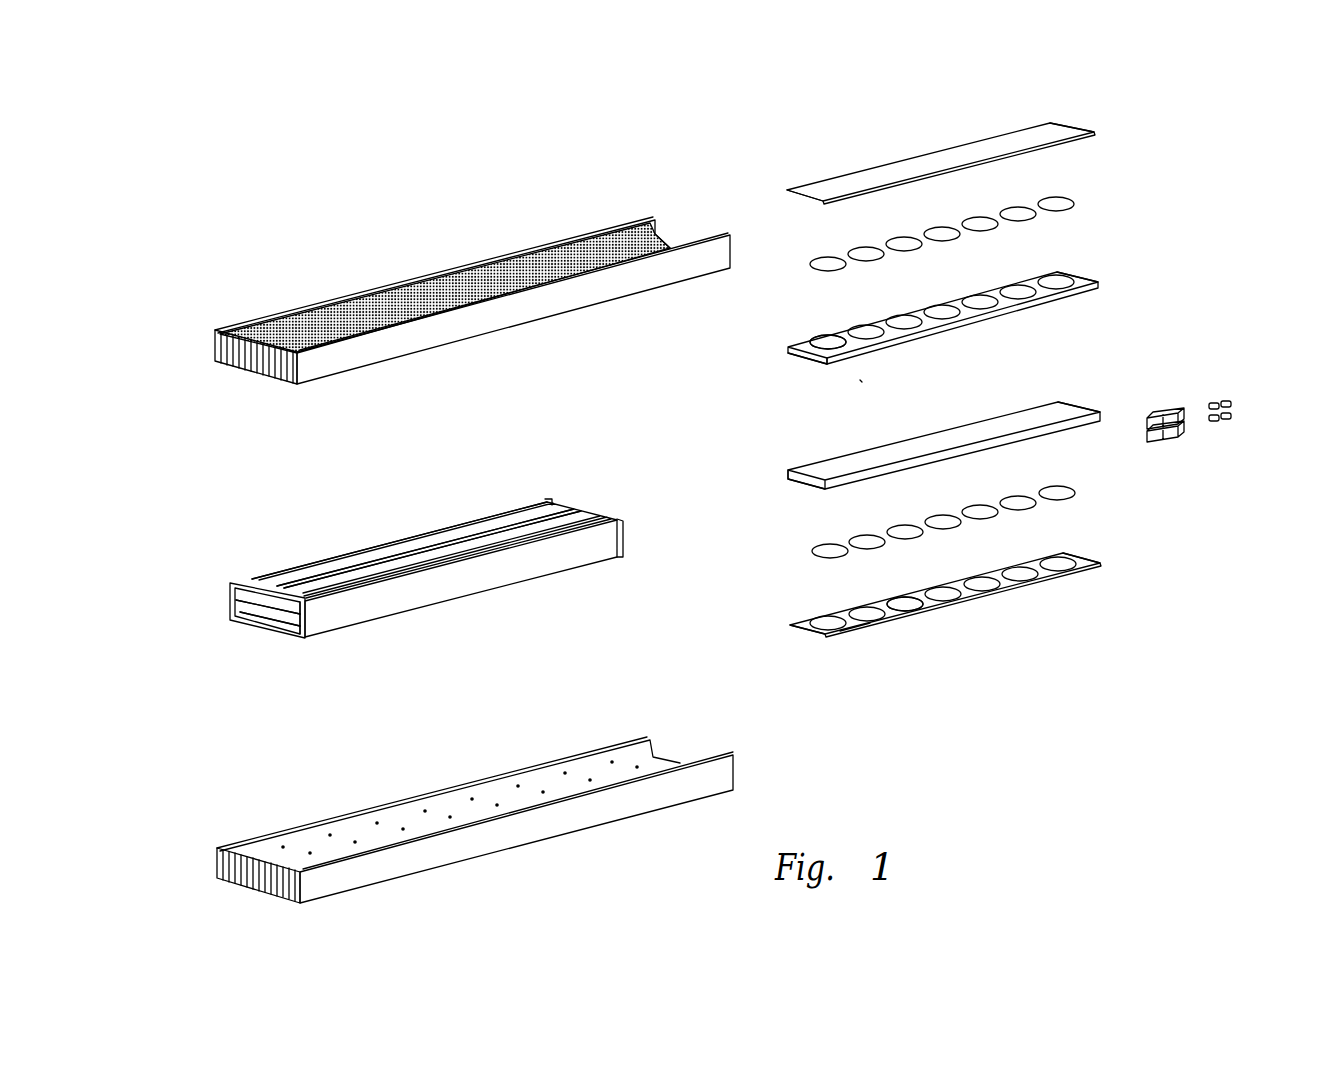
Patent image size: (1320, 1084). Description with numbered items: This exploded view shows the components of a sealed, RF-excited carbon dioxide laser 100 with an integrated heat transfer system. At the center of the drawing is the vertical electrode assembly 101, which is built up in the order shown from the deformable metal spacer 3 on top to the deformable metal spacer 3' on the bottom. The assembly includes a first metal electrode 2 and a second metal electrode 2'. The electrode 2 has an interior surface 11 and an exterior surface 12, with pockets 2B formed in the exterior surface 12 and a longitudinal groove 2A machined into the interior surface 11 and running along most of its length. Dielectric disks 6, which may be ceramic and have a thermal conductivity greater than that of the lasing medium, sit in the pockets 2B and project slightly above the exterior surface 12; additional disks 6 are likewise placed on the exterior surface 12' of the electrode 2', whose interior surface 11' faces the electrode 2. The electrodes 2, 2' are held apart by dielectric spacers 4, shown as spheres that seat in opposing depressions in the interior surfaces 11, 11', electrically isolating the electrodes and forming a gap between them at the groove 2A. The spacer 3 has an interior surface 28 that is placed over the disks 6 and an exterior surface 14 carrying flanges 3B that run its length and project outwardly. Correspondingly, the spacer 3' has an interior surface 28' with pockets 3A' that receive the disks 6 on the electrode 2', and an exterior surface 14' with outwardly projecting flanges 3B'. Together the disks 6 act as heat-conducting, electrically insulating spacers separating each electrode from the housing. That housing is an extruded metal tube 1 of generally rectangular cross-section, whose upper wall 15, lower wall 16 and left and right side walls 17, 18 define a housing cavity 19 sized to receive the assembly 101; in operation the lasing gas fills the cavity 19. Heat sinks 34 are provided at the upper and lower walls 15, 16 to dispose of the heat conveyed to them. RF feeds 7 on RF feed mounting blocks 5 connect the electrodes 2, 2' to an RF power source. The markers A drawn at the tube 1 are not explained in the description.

The laser 100 is at (371, 189).
The electrode assembly 101 is at (1160, 186).
The heat sinks 34 is at (430, 343).
The deformable metal spacer 3 is at (903, 163).
The flanges 3B is at (913, 132).
The exterior surface 14 is at (1087, 108).
The interior surface 28 is at (762, 203).
The disks 6 is at (821, 260).
The first metal electrode 2 is at (905, 318).
The pockets 2B is at (819, 333).
The longitudinal groove 2A is at (799, 359).
The interior surface 11 is at (789, 388).
The exterior surface 12 is at (1111, 262).
The dielectric spacers 4 is at (862, 384).
The RF feed mounting blocks 5 is at (1167, 412).
The RF feeds 7 is at (1223, 437).
The second metal electrode 2' is at (944, 447).
The interior surface 11' is at (1102, 390).
The exterior surface 12' is at (783, 496).
The deformable metal spacer 3' is at (945, 601).
The interior surface 28' is at (1122, 540).
The exterior surface 14' is at (784, 652).
The flanges 3B' is at (882, 664).
The pockets 3A' is at (935, 652).
The extruded metal tube 1 is at (431, 598).
The left side wall 17 is at (230, 603).
The upper wall 15 is at (326, 573).
The housing cavity 19 is at (270, 617).
The lower wall 16 is at (270, 633).
The right side wall 18 is at (310, 618).
The direction A is at (452, 521).